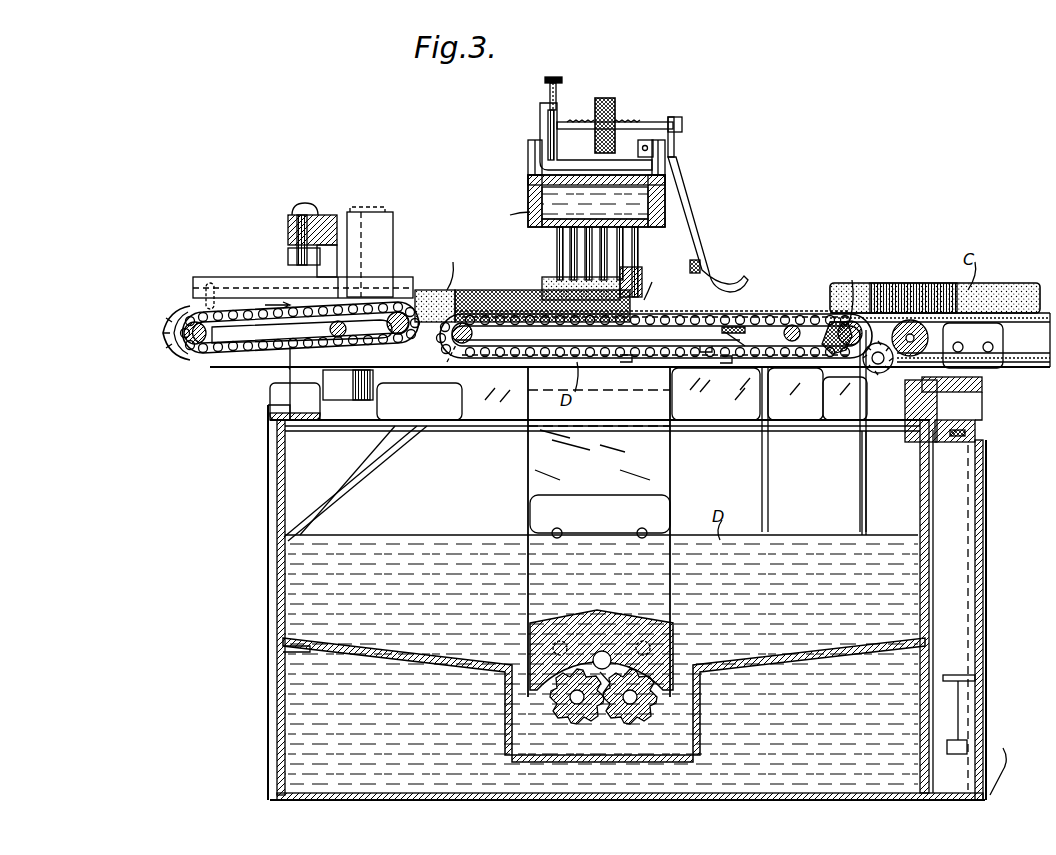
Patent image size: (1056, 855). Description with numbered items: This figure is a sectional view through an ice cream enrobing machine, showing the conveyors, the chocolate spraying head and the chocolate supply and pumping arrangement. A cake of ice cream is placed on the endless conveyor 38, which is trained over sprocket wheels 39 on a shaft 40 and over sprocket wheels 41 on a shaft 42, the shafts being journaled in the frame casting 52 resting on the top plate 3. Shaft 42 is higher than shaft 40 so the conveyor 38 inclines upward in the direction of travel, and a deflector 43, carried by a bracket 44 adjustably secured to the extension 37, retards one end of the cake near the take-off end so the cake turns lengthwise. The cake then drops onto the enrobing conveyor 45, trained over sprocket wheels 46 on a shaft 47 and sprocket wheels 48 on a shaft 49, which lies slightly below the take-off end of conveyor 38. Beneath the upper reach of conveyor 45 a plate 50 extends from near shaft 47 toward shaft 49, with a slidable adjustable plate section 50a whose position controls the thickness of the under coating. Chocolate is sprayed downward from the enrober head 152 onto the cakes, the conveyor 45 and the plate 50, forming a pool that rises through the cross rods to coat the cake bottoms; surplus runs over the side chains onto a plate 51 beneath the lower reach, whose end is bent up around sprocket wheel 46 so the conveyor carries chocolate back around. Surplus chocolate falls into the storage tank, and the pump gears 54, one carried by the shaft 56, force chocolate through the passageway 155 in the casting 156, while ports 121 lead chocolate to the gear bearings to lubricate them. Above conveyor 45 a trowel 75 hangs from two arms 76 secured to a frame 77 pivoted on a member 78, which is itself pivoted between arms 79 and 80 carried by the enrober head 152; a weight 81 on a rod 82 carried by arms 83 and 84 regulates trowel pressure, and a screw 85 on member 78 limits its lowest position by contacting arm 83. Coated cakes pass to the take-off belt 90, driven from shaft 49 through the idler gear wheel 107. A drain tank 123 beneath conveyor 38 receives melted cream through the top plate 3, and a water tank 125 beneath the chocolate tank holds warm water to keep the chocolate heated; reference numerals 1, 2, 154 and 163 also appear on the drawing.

The machine base 1 is at (998, 771).
The tank 2 is at (978, 562).
The top plate 3 is at (985, 410).
The extension 37 is at (325, 215).
The endless conveyor 38 is at (250, 300).
The sprocket wheels 39 is at (205, 355).
The shaft 40 is at (175, 340).
The sprocket wheels 41 is at (398, 342).
The shaft 42 is at (402, 310).
The deflector 43 is at (393, 240).
The bracket 44 is at (365, 207).
The enrobing conveyor 45 is at (812, 312).
The sprocket wheels 46 is at (457, 362).
The shaft 47 is at (470, 292).
The sprocket wheels 48 is at (832, 348).
The shaft 49 is at (850, 320).
The plate 50 is at (665, 326).
The adjustable plate section 50a is at (740, 327).
The plate 51 is at (655, 362).
The frame casting 52 is at (285, 362).
The pump gears 54 is at (637, 722).
The shaft 56 is at (640, 742).
The trowel 75 is at (738, 283).
The arms 76 is at (698, 218).
The frame 77 is at (660, 150).
The member 78 is at (540, 125).
The arm 79 is at (528, 165).
The arm 80 is at (665, 168).
The weight 81 is at (606, 98).
The rod 82 is at (635, 122).
The arm 83 is at (548, 135).
The arm 84 is at (676, 117).
The screw 85 is at (560, 80).
The belt 90 is at (1030, 360).
The idler gear wheel 107 is at (880, 342).
The ports 121 is at (572, 628).
The drain tank 123 is at (330, 470).
The water tank 125 is at (905, 670).
The enrober head 152 is at (528, 195).
The gear 154 is at (560, 715).
The passageway 155 is at (606, 652).
The casting 156 is at (585, 612).
The compartment 163 is at (886, 483).